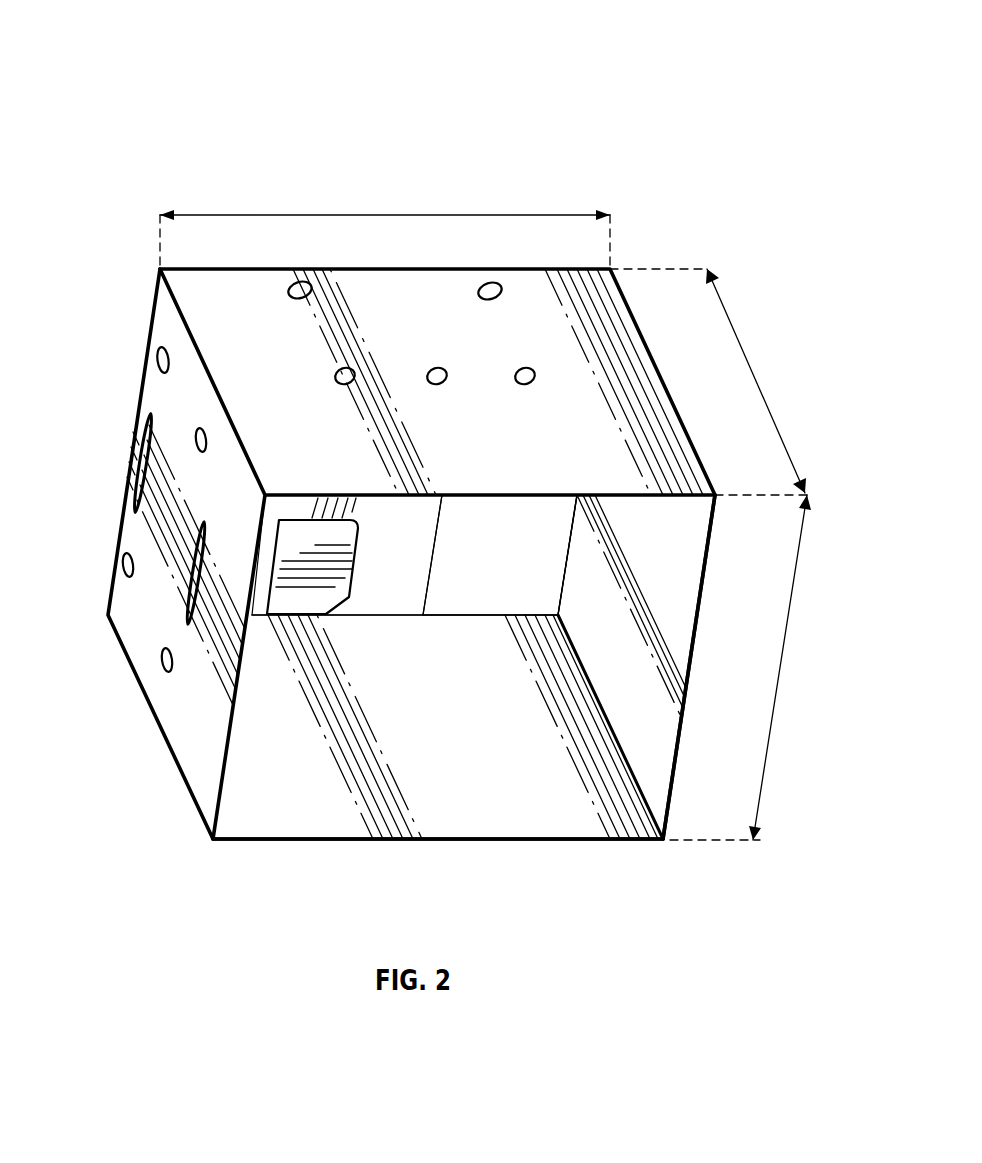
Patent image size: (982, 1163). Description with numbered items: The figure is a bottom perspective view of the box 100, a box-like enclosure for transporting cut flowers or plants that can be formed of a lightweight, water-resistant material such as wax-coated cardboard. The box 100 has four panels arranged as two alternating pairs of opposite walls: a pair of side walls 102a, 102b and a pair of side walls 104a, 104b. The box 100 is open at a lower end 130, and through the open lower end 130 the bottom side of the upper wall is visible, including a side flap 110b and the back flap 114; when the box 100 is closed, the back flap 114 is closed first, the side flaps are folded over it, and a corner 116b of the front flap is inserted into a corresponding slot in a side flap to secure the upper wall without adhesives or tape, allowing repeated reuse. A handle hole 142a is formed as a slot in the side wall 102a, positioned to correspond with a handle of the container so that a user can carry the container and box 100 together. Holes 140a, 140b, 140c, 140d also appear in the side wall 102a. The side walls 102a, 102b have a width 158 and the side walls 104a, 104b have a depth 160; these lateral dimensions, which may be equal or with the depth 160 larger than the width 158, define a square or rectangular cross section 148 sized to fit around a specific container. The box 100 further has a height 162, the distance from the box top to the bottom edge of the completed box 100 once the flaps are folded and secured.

The box 100 is at (112, 46).
The side wall 102a is at (190, 750).
The side wall 102b is at (658, 748).
The side wall 104a is at (253, 277).
The side wall 104b is at (514, 826).
The side flap 110b is at (372, 602).
The back flap 114 is at (498, 585).
The corner 116b is at (307, 595).
The lower end 130 is at (332, 826).
The first mounting hole 140a is at (124, 566).
The second mounting hole 140b is at (157, 358).
The third mounting hole 140c is at (162, 660).
The fourth mounting hole 140d is at (195, 437).
The handle hole 142a is at (203, 519).
The cross section 148 is at (290, 843).
The width 158 is at (780, 677).
The depth 160 is at (522, 212).
The height 162 is at (758, 376).